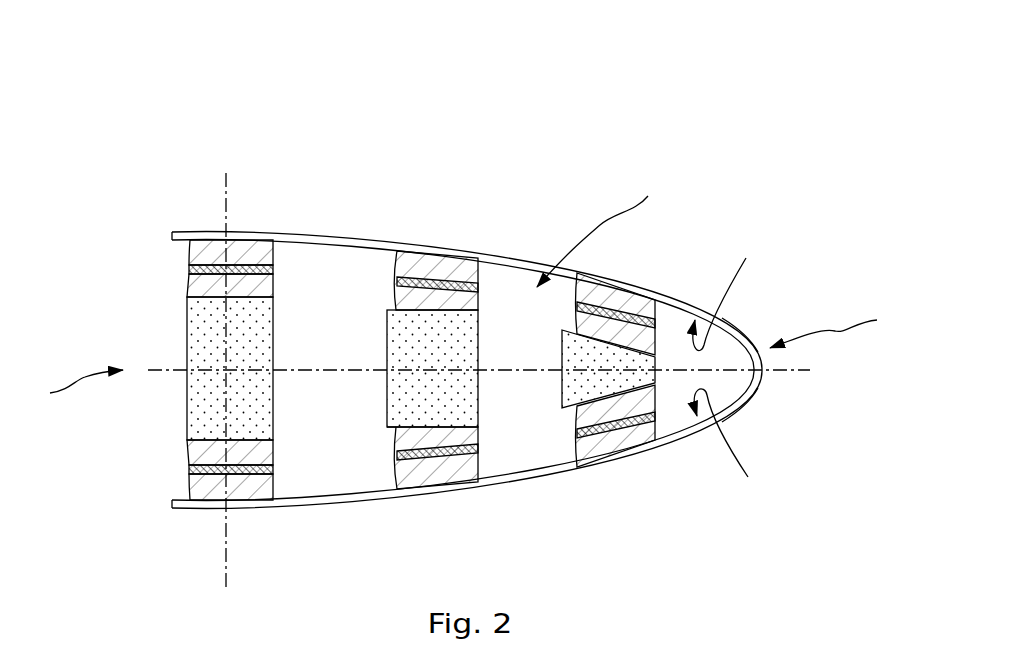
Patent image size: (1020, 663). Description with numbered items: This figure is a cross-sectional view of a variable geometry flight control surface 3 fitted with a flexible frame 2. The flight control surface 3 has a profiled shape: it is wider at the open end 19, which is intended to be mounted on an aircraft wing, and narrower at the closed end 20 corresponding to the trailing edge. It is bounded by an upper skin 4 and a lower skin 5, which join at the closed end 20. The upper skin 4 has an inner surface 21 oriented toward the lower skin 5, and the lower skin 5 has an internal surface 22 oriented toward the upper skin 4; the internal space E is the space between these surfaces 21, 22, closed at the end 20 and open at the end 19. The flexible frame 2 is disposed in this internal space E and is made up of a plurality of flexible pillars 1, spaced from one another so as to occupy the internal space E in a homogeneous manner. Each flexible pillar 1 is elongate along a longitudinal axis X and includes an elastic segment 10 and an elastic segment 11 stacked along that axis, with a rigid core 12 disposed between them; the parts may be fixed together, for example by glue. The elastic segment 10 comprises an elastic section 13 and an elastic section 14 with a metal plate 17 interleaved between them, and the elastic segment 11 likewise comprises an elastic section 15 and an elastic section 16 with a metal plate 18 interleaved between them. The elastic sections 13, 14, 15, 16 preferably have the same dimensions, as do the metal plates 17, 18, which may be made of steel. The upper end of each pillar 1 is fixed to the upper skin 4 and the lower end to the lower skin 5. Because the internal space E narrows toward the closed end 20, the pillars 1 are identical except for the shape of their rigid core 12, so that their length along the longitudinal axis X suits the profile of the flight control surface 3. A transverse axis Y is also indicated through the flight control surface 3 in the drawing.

The flexible pillar 1 is at (206, 194).
The flexible frame 2 is at (563, 85).
The variable geometry flight control surface 3 is at (843, 236).
The upper skin 4 is at (747, 327).
The lower skin 5 is at (756, 402).
The elastic segment 10 is at (387, 253).
The elastic segment 11 is at (371, 488).
The rigid core 12 is at (185, 343).
The elastic section 13 is at (203, 250).
The elastic section 14 is at (260, 288).
The elastic section 15 is at (200, 485).
The elastic section 16 is at (260, 453).
The metal plate 17 is at (231, 265).
The metal plate 18 is at (237, 472).
The open end 19 is at (71, 389).
The closed end 20 is at (837, 325).
The inner surface 21 is at (728, 290).
The internal surface 22 is at (729, 447).
The internal space E is at (600, 227).
The longitudinal axis X is at (227, 210).
The longitudinal axis Y is at (776, 374).